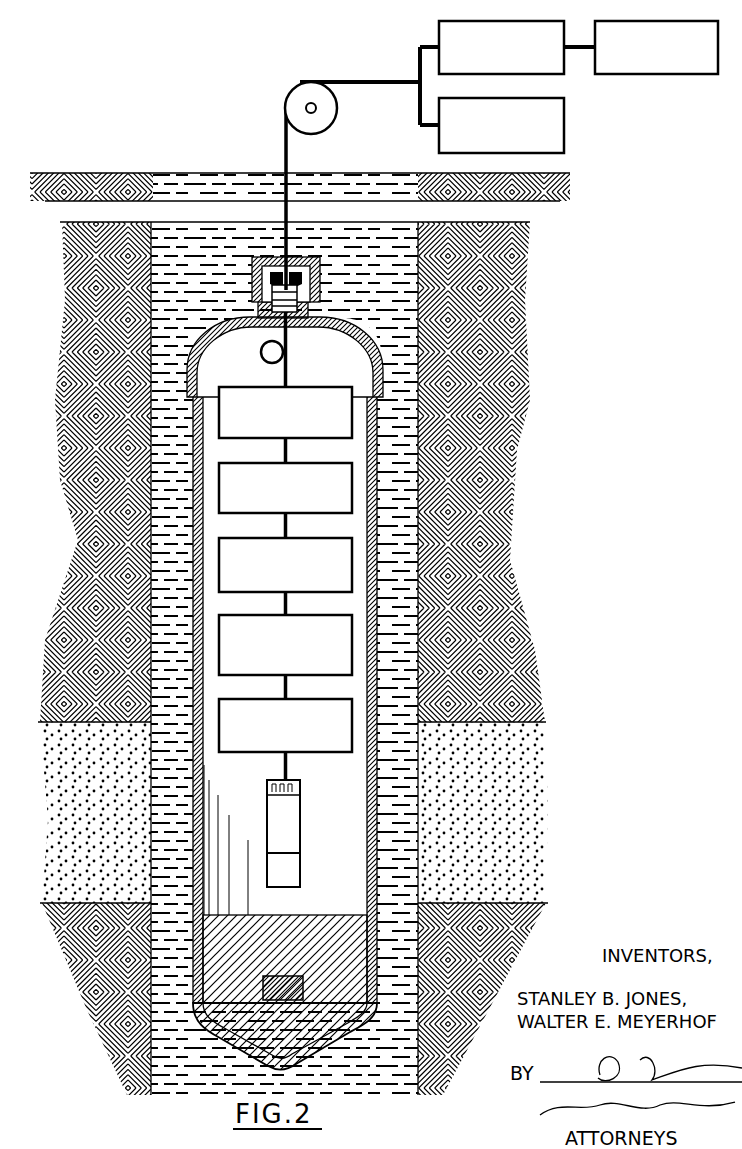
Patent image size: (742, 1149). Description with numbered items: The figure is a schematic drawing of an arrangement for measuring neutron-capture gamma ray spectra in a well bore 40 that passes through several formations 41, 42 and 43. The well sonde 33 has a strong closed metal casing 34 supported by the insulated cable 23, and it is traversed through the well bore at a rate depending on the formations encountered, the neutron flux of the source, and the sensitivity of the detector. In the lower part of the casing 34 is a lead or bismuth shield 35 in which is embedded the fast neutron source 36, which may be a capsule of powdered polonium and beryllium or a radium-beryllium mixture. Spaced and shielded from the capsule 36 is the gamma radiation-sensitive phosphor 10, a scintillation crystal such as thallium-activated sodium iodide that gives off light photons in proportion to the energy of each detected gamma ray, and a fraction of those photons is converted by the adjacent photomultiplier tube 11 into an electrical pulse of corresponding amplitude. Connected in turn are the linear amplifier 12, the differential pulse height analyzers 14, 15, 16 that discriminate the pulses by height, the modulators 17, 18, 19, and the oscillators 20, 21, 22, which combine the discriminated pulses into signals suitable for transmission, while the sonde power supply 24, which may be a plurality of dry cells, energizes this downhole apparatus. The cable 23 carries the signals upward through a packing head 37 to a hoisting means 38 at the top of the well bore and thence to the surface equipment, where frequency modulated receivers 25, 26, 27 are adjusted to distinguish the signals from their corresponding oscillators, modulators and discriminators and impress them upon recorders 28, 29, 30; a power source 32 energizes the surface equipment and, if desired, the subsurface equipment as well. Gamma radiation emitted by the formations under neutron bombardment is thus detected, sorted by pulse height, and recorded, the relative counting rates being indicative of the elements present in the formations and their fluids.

The solid phosphor 10 is at (296, 872).
The photomultiplier tube 11 is at (300, 835).
The linear amplifier 12 is at (352, 722).
The differential discriminator 14 is at (370, 645).
The differential discriminator 15 is at (370, 645).
The differential discriminator 16 is at (352, 640).
The modulator 17 is at (370, 565).
The modulator 18 is at (370, 565).
The modulator 19 is at (352, 557).
The oscillator 20 is at (370, 488).
The oscillator 21 is at (370, 488).
The oscillator 22 is at (352, 477).
The cable 23 is at (390, 82).
The sonde power supply 24 is at (353, 418).
The frequency modulated receiver 25 is at (446, 37).
The frequency modulated receiver 26 is at (446, 37).
The frequency modulated receiver 27 is at (441, 24).
The recorder 28 is at (664, 62).
The recorder 29 is at (664, 62).
The recorder 30 is at (614, 76).
The power source 32 is at (566, 125).
The well sonde 33 is at (232, 320).
The metal casing 34 is at (193, 603).
The shield 35 is at (238, 1052).
The fast neutron source 36 is at (292, 1003).
The packing head 37 is at (300, 308).
The hoisting means 38 is at (334, 122).
The well bore 40 is at (157, 184).
The formation 41 is at (97, 667).
The formation 42 is at (97, 824).
The formation 43 is at (97, 1004).